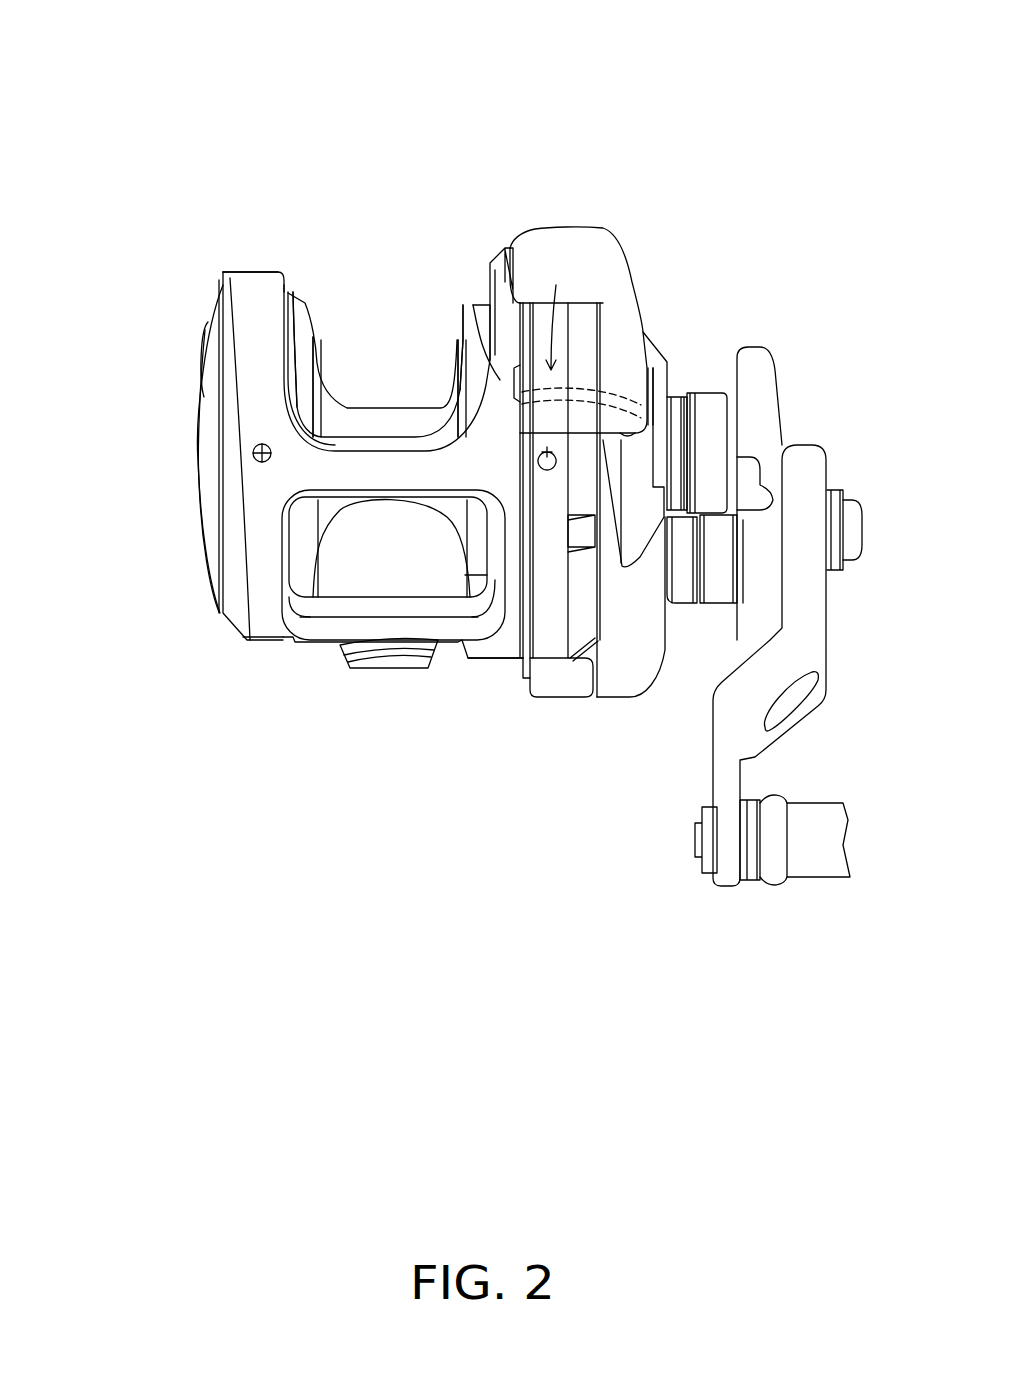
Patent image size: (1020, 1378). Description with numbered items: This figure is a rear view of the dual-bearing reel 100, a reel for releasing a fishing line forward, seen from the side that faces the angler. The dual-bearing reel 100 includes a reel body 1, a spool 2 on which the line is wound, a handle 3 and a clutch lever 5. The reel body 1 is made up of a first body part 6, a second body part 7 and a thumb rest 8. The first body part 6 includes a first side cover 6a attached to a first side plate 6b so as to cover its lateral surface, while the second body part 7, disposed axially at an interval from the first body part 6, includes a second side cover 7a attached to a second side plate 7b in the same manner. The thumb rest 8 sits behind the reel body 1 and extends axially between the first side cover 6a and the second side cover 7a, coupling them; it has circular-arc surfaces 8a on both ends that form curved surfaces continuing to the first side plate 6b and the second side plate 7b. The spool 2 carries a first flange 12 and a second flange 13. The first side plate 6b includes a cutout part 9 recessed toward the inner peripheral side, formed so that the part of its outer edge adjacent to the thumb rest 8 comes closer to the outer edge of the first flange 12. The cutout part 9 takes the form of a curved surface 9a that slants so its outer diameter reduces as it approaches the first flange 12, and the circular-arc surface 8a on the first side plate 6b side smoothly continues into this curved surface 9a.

The dual-bearing reel 100 is at (705, 108).
The reel body 1 is at (238, 182).
The spool 2 is at (403, 510).
The handle 3 is at (822, 878).
The clutch lever 5 is at (603, 263).
The first body part 6 is at (528, 713).
The first side cover 6a is at (553, 660).
The first side plate 6b is at (504, 658).
The second body part 7 is at (243, 655).
The second side cover 7a is at (208, 515).
The second side plate 7b is at (262, 272).
The thumb rest 8 is at (375, 470).
The circular-arc surfaces 8a is at (456, 470).
The cutout part 9 is at (500, 300).
The curved surface 9a is at (500, 380).
The first flange 12 is at (457, 282).
The second flange 13 is at (323, 282).